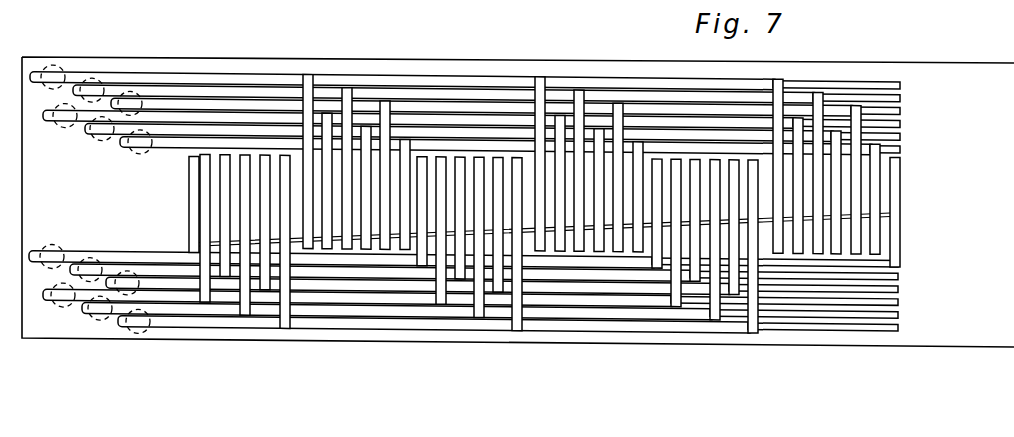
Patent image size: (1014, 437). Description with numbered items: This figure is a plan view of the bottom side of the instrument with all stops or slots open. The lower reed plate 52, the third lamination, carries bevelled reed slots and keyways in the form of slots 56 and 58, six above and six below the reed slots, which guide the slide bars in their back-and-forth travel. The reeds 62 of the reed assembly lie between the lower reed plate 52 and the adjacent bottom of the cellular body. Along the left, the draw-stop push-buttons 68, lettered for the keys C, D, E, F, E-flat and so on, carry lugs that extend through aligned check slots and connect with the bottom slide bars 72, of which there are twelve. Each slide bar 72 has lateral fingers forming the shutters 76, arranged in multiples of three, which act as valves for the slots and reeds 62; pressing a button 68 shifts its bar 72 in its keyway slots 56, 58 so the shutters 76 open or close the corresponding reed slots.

The lower reed plate 52 is at (948, 333).
The keyway slots 56 is at (924, 93).
The keyway slots 58 is at (900, 285).
The reeds 62 is at (914, 196).
The push-buttons 68 is at (153, 352).
The slide bars 72 is at (343, 346).
The shutters 76 is at (758, 362).